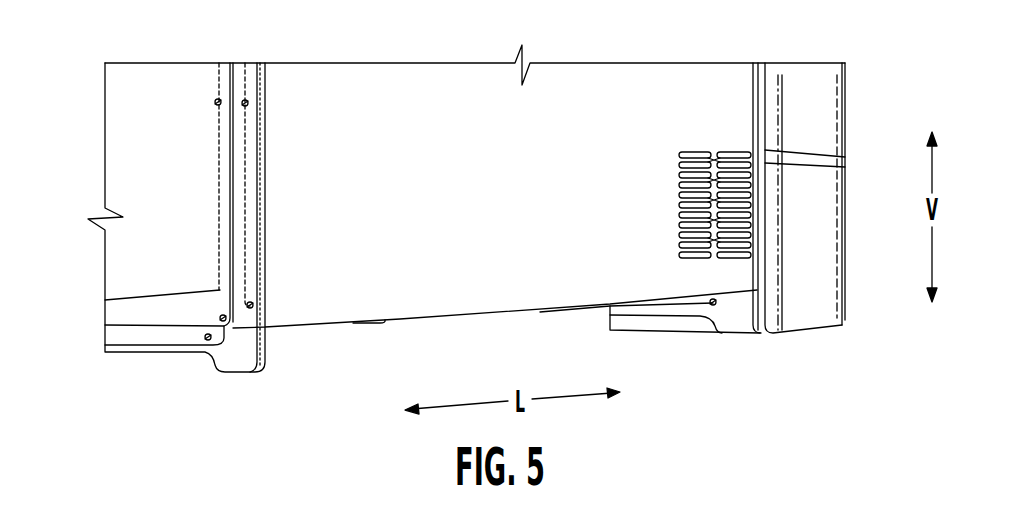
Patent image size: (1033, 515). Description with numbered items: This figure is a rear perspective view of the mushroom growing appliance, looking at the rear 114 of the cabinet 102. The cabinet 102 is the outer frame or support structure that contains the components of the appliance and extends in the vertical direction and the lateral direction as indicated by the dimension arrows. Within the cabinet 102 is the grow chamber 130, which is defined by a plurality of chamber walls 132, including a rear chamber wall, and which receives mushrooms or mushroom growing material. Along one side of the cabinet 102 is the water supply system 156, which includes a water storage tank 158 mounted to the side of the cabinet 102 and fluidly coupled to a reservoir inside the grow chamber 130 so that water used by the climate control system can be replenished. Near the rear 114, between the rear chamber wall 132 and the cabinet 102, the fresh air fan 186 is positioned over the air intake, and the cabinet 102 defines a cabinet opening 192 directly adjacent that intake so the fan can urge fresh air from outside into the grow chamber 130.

The cabinet 102 is at (320, 305).
The rear 114 is at (478, 98).
The grow chamber 130 is at (148, 177).
The chamber walls 132 is at (223, 140).
The water supply system 156 is at (858, 84).
The water storage tank 158 is at (845, 113).
The fresh air fan 186 is at (748, 147).
The cabinet opening 192 is at (722, 263).